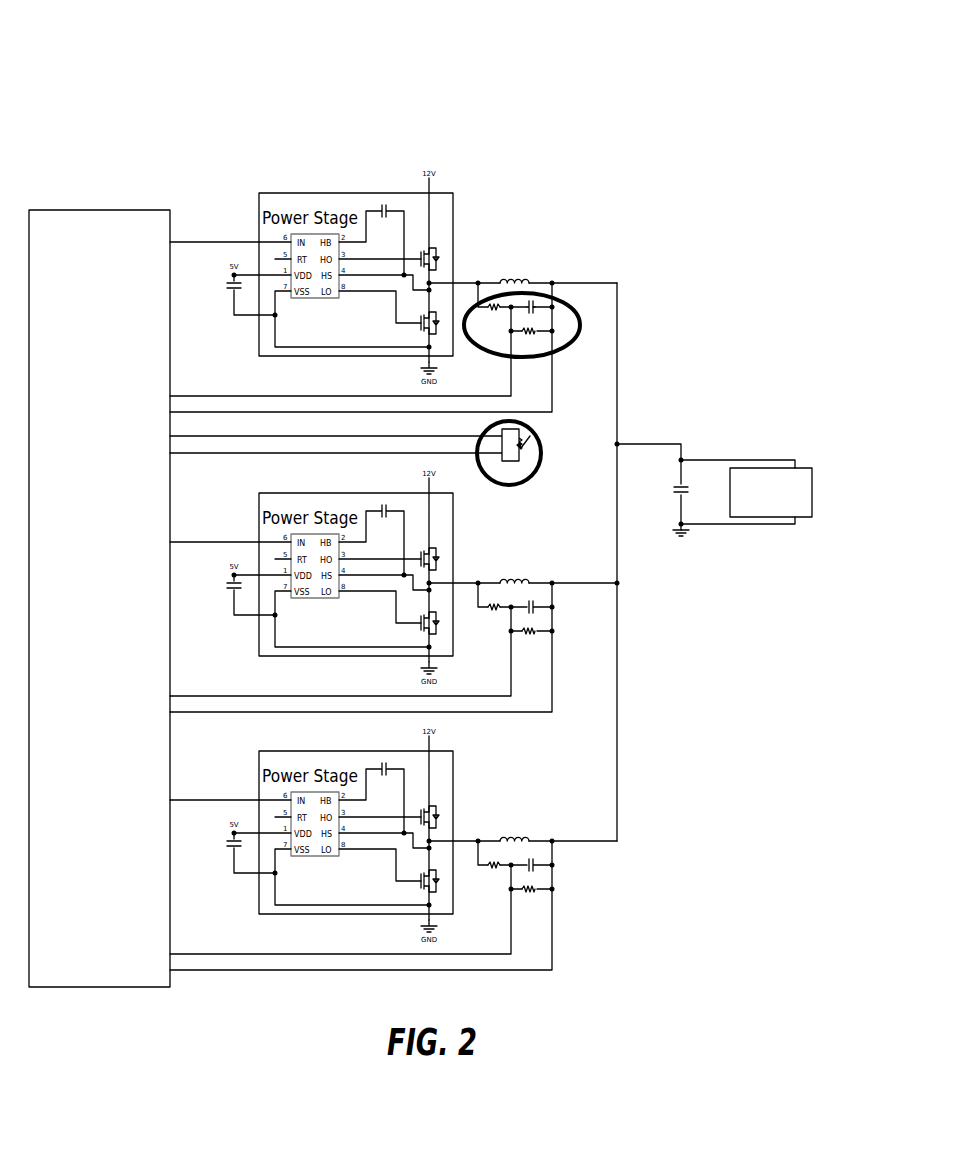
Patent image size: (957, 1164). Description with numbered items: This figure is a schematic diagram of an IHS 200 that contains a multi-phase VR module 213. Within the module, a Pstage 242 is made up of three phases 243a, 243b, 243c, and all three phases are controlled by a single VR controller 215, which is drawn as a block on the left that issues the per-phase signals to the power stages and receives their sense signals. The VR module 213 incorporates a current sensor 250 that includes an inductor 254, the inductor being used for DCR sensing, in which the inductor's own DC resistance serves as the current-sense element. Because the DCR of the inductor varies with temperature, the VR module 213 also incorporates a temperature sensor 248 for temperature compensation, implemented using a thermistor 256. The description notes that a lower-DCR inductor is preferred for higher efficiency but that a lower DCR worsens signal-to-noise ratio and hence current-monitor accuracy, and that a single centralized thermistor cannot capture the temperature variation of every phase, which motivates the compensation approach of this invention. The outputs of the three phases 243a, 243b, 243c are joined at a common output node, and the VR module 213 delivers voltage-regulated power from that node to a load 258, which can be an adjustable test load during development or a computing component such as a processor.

The IHS 200 is at (123, 57).
The multi-phase VR module 213 is at (203, 135).
The VR controller 215 is at (92, 209).
The Pstage 242 is at (331, 187).
The phase 243a is at (453, 221).
The phase 243b is at (453, 522).
The phase 243c is at (453, 781).
The temperature sensor 248 is at (541, 458).
The current sensor 250 is at (578, 340).
The inductor 254 is at (537, 299).
The thermistor 256 is at (540, 443).
The load 258 is at (810, 468).